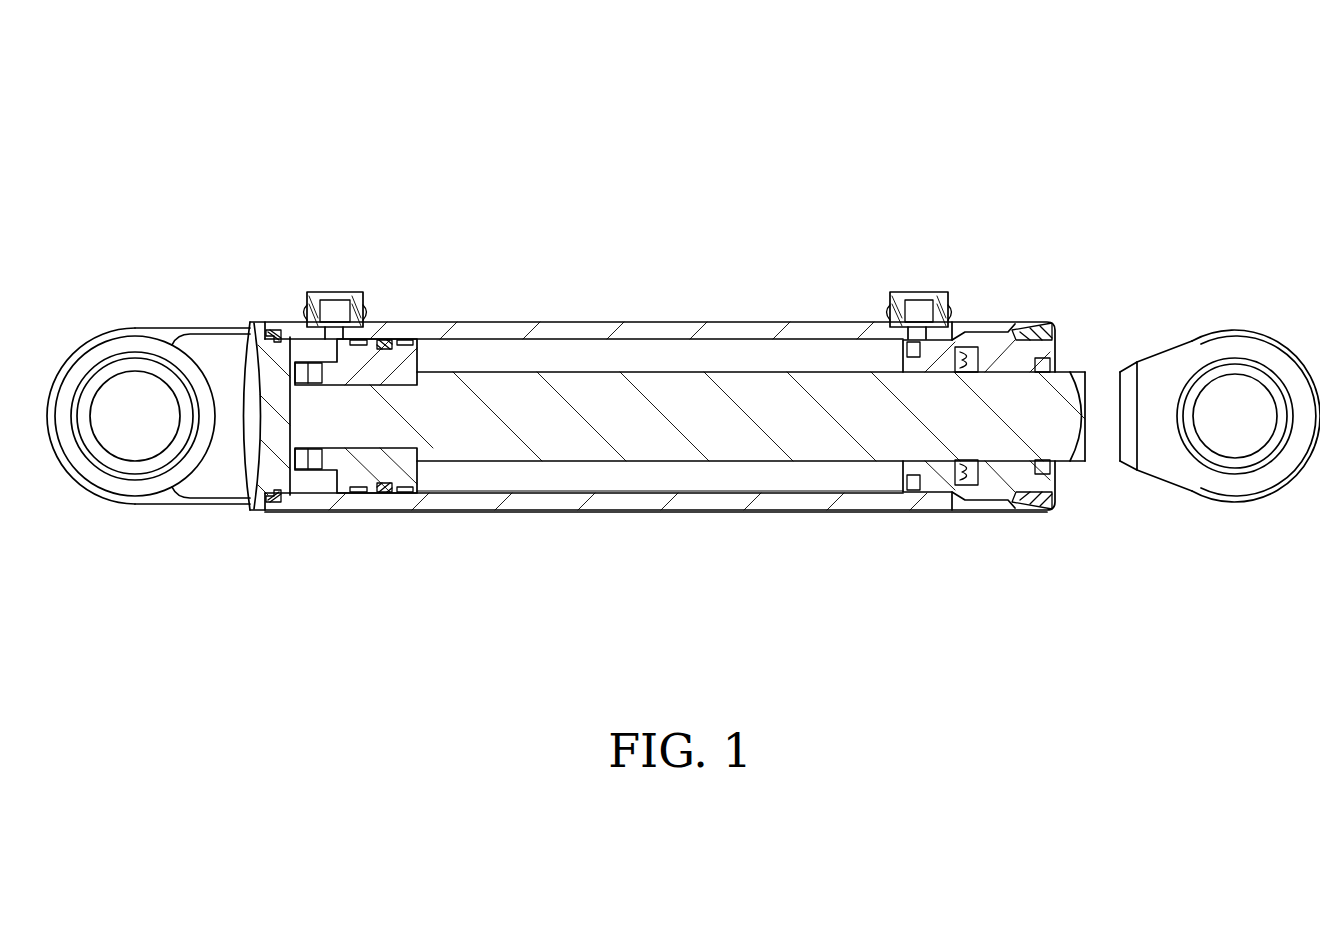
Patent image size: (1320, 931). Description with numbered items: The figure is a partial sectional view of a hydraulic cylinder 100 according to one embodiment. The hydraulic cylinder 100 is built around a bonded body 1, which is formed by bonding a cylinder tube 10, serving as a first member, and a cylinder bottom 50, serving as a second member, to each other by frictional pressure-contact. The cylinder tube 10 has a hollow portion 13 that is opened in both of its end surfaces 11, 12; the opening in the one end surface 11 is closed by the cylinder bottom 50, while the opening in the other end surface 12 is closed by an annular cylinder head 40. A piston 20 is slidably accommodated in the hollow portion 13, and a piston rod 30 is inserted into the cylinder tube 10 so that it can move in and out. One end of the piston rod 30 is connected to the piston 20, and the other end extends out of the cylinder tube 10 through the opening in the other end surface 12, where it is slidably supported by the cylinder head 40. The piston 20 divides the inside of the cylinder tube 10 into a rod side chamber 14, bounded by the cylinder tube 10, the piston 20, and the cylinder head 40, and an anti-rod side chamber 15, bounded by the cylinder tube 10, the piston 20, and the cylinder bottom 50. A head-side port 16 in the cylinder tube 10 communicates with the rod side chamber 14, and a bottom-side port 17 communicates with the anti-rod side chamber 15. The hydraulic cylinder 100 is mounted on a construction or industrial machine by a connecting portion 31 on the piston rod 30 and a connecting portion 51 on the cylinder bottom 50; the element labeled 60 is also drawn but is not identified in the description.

The hydraulic cylinder 100 is at (1124, 191).
The bonded body 1 is at (300, 613).
The cylinder tube 10 is at (413, 498).
The one end surface 11 is at (257, 322).
The other end surface 12 is at (1030, 322).
The hollow portion 13 is at (487, 487).
The rod side chamber 14 is at (735, 358).
The anti-rod side chamber 15 is at (330, 352).
The head-side port 16 is at (918, 296).
The bottom-side port 17 is at (335, 296).
The piston 20 is at (403, 355).
The piston rod 30 is at (590, 393).
The connecting portion 31 is at (1237, 340).
The cylinder head 40 is at (1027, 507).
The cylinder bottom 50 is at (280, 505).
The connecting portion 51 is at (140, 480).
The wear ring 60 is at (460, 360).